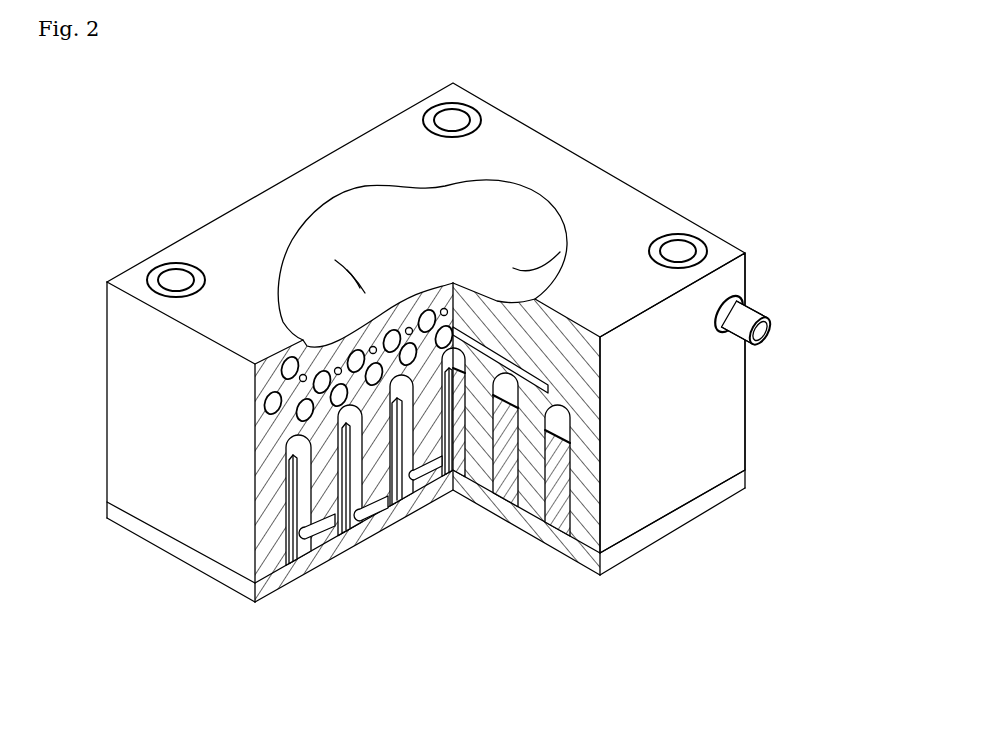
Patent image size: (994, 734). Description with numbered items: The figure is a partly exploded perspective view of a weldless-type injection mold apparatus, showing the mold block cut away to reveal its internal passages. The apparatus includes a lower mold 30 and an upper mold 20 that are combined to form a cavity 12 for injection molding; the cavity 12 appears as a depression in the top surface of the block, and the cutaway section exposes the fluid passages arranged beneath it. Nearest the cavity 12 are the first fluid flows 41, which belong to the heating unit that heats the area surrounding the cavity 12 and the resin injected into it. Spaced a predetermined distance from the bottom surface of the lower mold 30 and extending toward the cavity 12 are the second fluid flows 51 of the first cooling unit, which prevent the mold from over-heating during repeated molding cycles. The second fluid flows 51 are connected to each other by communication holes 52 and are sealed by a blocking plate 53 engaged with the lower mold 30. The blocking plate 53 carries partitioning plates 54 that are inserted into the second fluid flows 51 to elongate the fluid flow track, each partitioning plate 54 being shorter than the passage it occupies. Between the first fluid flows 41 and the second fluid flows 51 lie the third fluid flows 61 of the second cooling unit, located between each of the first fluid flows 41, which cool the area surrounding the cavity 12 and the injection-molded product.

The cavity 12 is at (513, 225).
The upper mold 20 is at (479, 377).
The lower mold 30 is at (717, 402).
The first fluid flows 41 is at (299, 379).
The second fluid flows 51 is at (357, 452).
The communication holes 52 is at (368, 500).
The blocking plate 53 is at (278, 580).
The partitioning plates 54 is at (312, 540).
The third fluid flows 61 is at (275, 414).